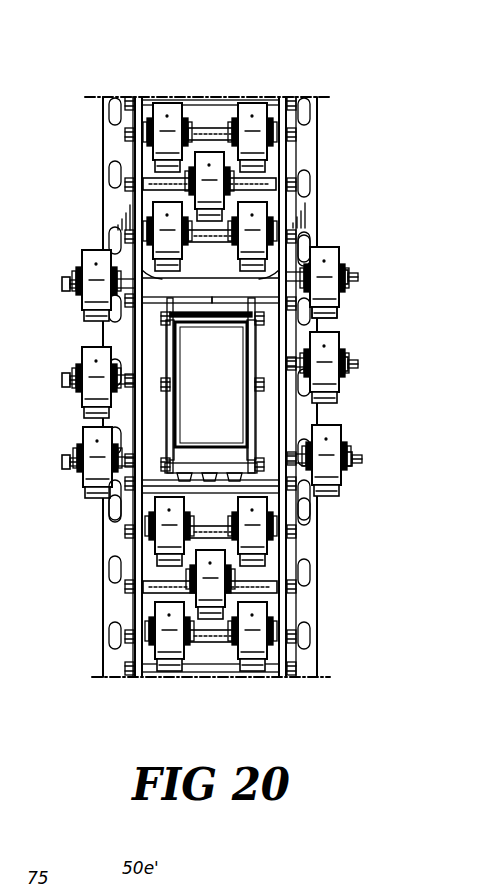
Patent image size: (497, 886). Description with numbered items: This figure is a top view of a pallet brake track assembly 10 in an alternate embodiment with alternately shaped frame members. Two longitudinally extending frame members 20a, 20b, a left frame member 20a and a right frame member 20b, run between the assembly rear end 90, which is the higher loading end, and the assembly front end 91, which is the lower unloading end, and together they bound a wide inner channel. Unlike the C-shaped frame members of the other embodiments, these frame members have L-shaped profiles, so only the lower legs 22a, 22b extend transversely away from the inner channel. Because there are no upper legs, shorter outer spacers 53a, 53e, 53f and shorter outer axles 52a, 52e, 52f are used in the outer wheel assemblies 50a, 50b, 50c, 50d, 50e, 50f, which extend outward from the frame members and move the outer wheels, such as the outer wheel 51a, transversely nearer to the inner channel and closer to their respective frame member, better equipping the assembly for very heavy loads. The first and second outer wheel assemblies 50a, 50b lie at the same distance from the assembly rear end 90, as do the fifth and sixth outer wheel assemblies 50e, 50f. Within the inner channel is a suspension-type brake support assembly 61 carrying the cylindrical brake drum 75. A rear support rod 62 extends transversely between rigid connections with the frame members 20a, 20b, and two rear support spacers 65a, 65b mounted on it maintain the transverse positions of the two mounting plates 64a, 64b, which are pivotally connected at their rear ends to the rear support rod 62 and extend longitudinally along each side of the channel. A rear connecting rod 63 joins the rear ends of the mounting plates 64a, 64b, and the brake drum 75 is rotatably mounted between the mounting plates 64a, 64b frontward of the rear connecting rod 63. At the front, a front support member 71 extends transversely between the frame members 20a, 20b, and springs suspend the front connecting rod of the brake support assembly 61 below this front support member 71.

The pallet brake track assembly 10 is at (262, 50).
The assembly rear end 90 is at (127, 92).
The assembly front end 91 is at (128, 684).
The left frame member 20a is at (100, 118).
The right frame member 20b is at (320, 118).
The lower leg 22a is at (113, 135).
The lower leg 22b is at (303, 140).
The rear support rod 62 is at (105, 226).
The rear connecting rod 63 is at (315, 248).
The first outer wheel assembly 50a is at (338, 246).
The second outer wheel assembly 50b is at (70, 269).
The third outer wheel assembly 50c is at (348, 376).
The fourth outer wheel assembly 50d is at (66, 396).
The fifth outer wheel assembly 50e is at (352, 469).
The sixth outer wheel assembly 50f is at (67, 478).
The outer wheel 51a is at (333, 303).
The outer axle 52a is at (360, 280).
The outer axle 52e is at (360, 462).
The outer axle 52f is at (62, 462).
The outer spacer 53a is at (329, 228).
The outer spacer 53e is at (300, 473).
The outer spacer 53f is at (113, 500).
The brake support assembly 61 is at (154, 444).
The mounting plate 64a is at (168, 362).
The mounting plate 64b is at (255, 425).
The rear support spacer 65a is at (187, 298).
The rear support spacer 65b is at (243, 298).
The brake drum 75 is at (190, 380).
The front support member 71 is at (290, 507).